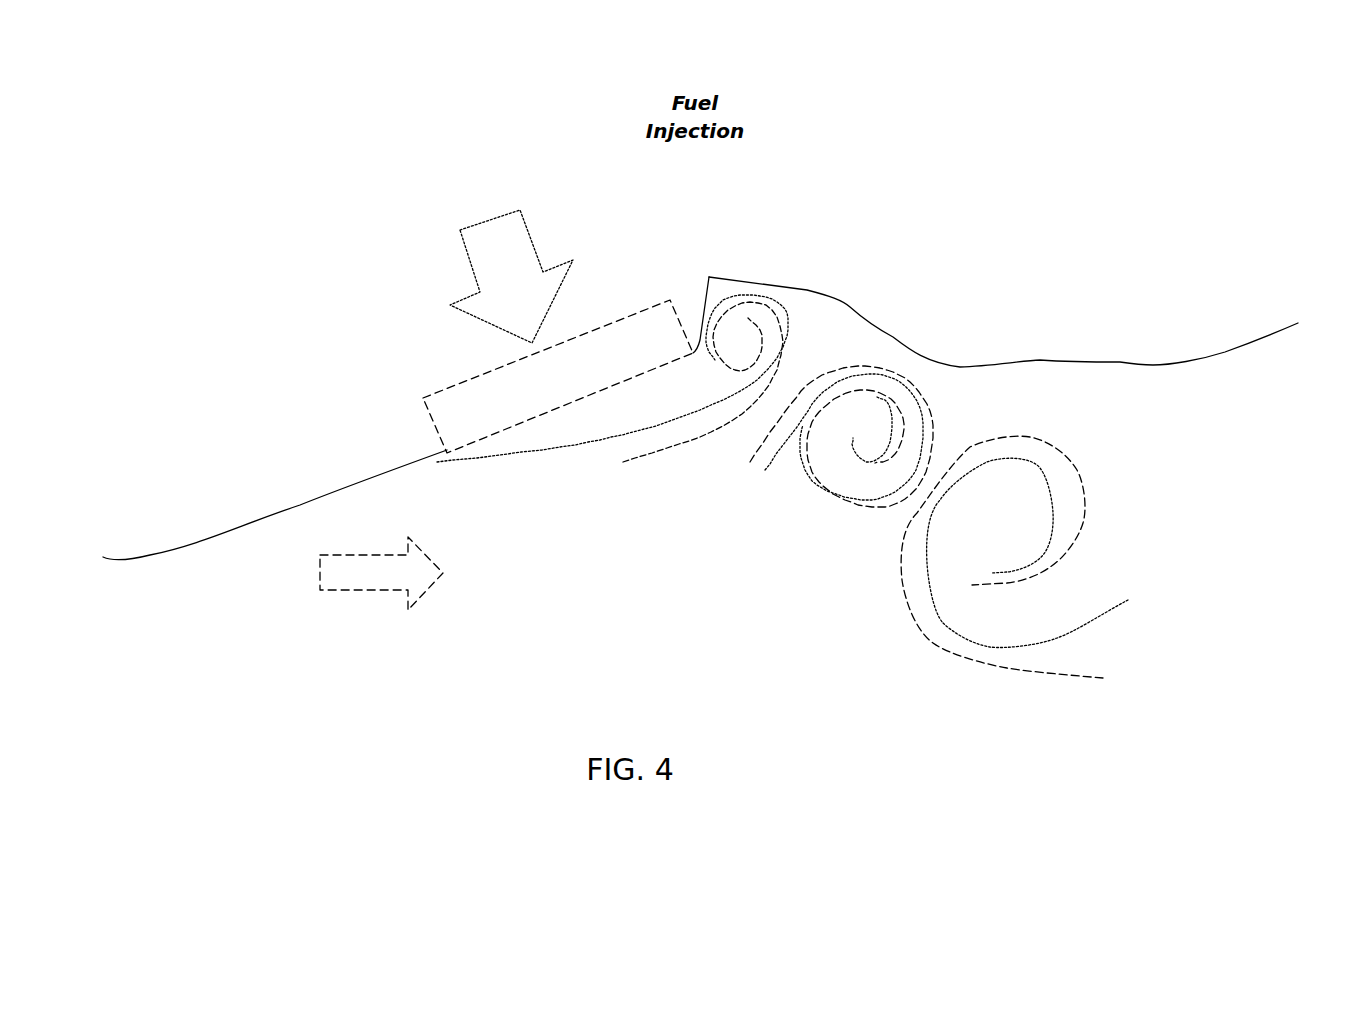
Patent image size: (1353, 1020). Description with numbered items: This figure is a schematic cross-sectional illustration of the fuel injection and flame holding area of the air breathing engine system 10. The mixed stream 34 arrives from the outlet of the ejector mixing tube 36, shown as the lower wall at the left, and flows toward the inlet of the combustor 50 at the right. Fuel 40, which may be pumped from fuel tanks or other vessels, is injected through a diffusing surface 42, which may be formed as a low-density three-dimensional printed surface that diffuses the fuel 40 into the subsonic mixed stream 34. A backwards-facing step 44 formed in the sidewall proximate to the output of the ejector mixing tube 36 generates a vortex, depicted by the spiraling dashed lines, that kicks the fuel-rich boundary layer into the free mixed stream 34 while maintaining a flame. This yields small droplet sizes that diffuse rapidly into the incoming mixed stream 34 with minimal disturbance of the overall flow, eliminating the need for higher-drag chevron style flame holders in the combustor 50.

The combustor 10 is at (375, 267).
The mixed stream 34 is at (355, 590).
The ejector mixing tube 36 is at (161, 622).
The fuel 40 is at (496, 295).
The diffusing surface 42 is at (541, 389).
The backwards-facing step 44 is at (707, 290).
The combustor 50 is at (1178, 552).